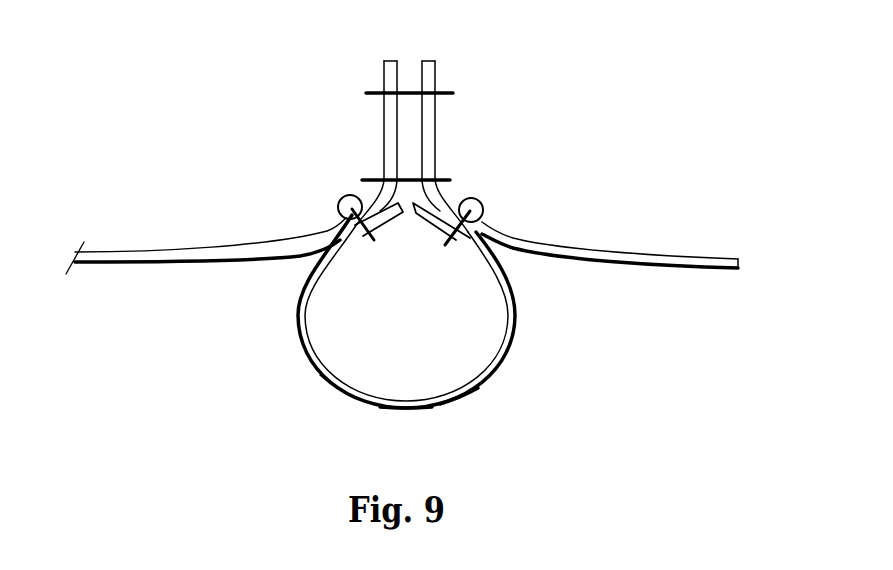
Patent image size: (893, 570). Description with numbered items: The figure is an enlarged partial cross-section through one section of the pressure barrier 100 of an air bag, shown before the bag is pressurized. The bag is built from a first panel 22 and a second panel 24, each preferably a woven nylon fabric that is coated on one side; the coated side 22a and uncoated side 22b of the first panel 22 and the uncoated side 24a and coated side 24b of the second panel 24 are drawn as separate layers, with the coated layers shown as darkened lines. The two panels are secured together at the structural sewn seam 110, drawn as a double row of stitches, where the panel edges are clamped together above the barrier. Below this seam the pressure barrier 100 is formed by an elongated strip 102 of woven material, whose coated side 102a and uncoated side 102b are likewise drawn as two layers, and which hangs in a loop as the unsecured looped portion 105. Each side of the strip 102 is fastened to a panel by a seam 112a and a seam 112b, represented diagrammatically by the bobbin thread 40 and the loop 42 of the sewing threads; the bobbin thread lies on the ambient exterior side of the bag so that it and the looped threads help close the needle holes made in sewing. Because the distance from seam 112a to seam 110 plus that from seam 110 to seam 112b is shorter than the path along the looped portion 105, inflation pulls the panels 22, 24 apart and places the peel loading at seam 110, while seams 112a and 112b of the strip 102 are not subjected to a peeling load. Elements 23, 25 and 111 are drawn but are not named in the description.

The first panel 22 is at (206, 258).
The coated side of first panel 22a is at (174, 251).
The uncoated side of first panel 22b is at (183, 264).
The first tube wall 23 is at (388, 56).
The second panel 24 is at (610, 264).
The uncoated side of second panel 24a is at (681, 258).
The coated side of second panel 24b is at (700, 270).
The second tube wall 25 is at (430, 70).
The bobbin thread 40 is at (340, 200).
The loop of sewing threads 42 is at (355, 194).
The pressure barrier 100 is at (409, 335).
The strip 102 is at (301, 291).
The coated side of strip 102a is at (408, 411).
The uncoated side of strip 102b is at (343, 388).
The looped portion 105 is at (464, 405).
The structural sewn seam 110 is at (368, 175).
The inner liner 111 is at (498, 310).
The first seam 112a is at (372, 243).
The second seam 112b is at (450, 237).